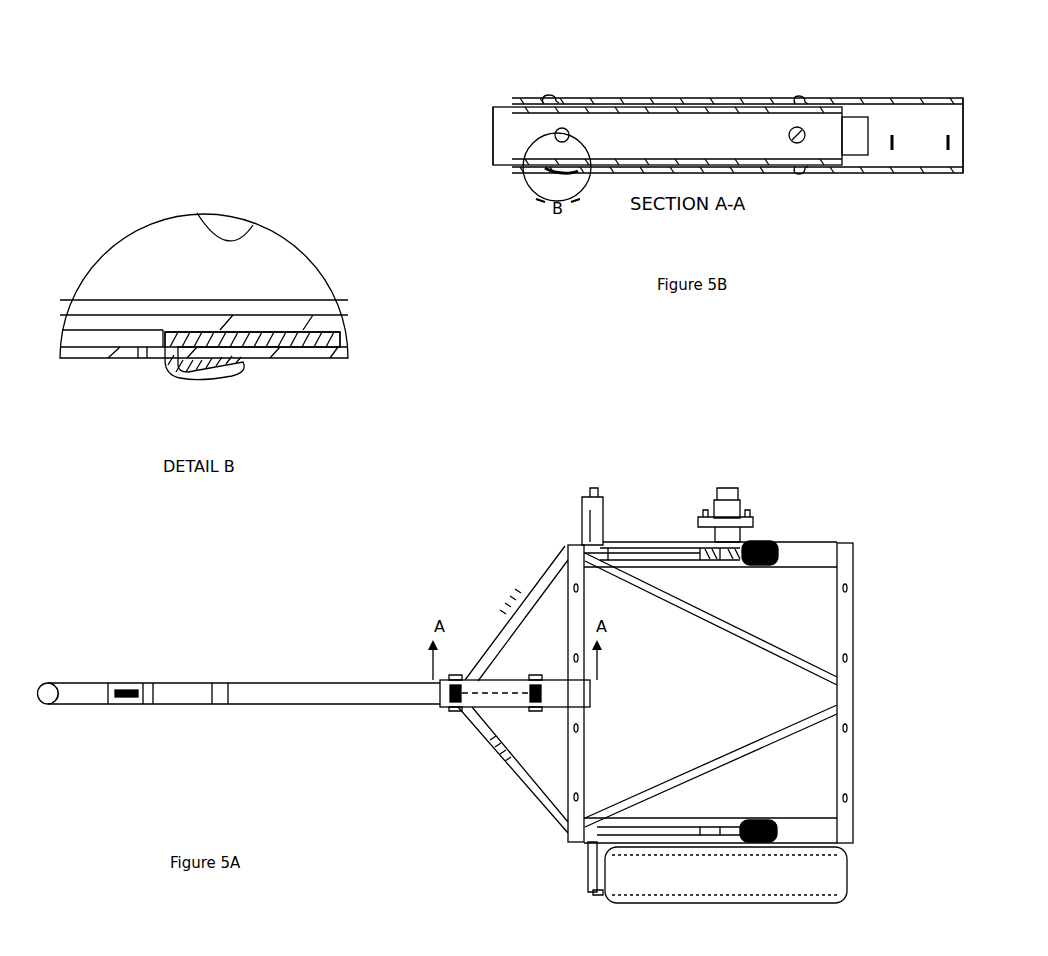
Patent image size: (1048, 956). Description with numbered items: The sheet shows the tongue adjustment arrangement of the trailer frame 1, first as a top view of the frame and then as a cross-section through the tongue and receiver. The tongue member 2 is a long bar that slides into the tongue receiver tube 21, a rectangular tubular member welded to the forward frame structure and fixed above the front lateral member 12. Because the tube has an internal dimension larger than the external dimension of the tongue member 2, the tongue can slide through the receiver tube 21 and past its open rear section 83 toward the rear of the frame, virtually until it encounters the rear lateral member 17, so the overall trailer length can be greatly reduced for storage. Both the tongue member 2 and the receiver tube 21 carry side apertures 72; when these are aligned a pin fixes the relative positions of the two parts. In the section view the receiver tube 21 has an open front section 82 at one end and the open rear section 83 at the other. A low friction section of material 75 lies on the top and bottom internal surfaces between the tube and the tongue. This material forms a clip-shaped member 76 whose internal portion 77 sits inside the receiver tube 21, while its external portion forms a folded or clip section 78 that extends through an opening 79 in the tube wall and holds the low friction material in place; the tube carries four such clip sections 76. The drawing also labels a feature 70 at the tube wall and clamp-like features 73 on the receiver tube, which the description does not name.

In FIG. 5A, the trailer frame 1 is at (667, 478).
In FIG. 5B, the tongue member 2 is at (475, 154).
In FIG. 5A, the tongue member 2 is at (289, 678).
In FIG. 5A, the front lateral member 12 is at (590, 763).
In FIG. 5A, the rear lateral member 17 is at (850, 630).
In FIG. 5B, the tongue receiver tube 21 is at (905, 97).
In FIG. 5A, the tongue receiver tube 21 is at (497, 685).
In FIG. 5B, the outer tube 70 is at (503, 105).
In FIG. 5B, the side apertures 72 is at (799, 128).
In FIG. 5A, the clamp 73 is at (457, 677).
In FIG. 5B, the low friction section of material 75 is at (787, 82).
In FIG. 5B, the clip-shaped member 76 is at (548, 100).
In FIG. 5B, the internal portion 77 is at (340, 343).
In FIG. 5B, the folded or clip section 78 is at (232, 373).
In FIG. 5B, the opening 79 is at (150, 358).
In FIG. 5B, the open front section 82 is at (518, 125).
In FIG. 5B, the open rear section 83 is at (950, 123).